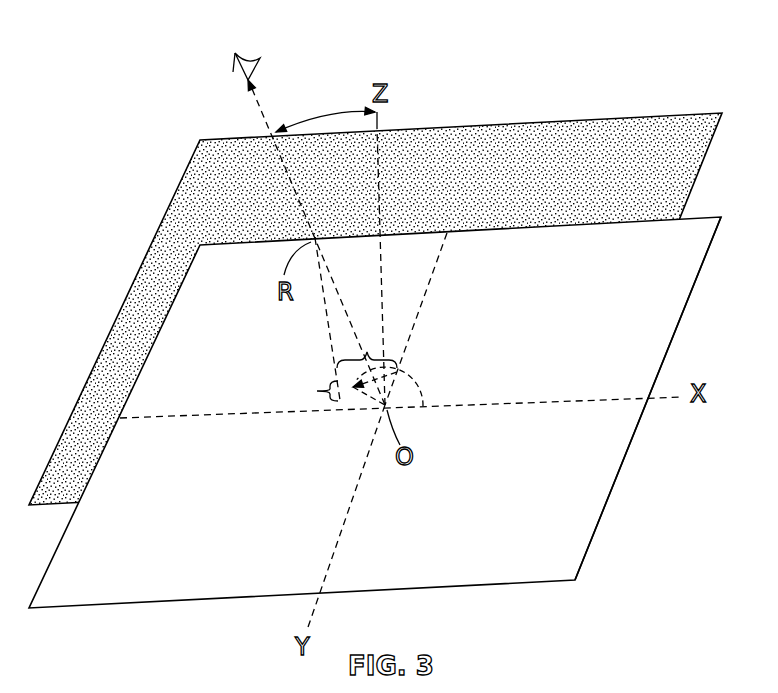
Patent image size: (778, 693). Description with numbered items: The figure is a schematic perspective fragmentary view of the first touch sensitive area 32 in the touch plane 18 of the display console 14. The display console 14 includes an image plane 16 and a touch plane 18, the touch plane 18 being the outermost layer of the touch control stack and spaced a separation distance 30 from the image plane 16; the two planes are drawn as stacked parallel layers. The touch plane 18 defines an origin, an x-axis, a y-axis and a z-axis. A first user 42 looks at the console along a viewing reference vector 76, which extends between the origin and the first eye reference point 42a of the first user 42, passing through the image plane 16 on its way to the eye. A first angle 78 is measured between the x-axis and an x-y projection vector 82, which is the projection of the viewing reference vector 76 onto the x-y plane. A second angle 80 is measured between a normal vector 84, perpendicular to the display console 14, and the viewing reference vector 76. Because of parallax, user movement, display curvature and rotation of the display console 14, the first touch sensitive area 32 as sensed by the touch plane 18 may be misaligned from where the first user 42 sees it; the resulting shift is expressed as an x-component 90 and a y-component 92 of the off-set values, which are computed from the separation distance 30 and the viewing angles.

The display console 14 is at (375, 340).
The image plane 16 is at (563, 119).
The touch plane 18 is at (607, 508).
The separation distance 30 is at (335, 340).
The first touch sensitive area 32 is at (629, 450).
The first user 42 is at (225, 31).
The first eye reference point 42a is at (236, 76).
The viewing reference vector 76 is at (264, 106).
The first angle 78 is at (414, 376).
The second angle 80 is at (340, 112).
The x-y projection vector 82 is at (352, 392).
The normal vector 84 is at (380, 126).
The x-component of the off-set values 90 is at (372, 352).
The y-component of the off-set values 92 is at (316, 391).